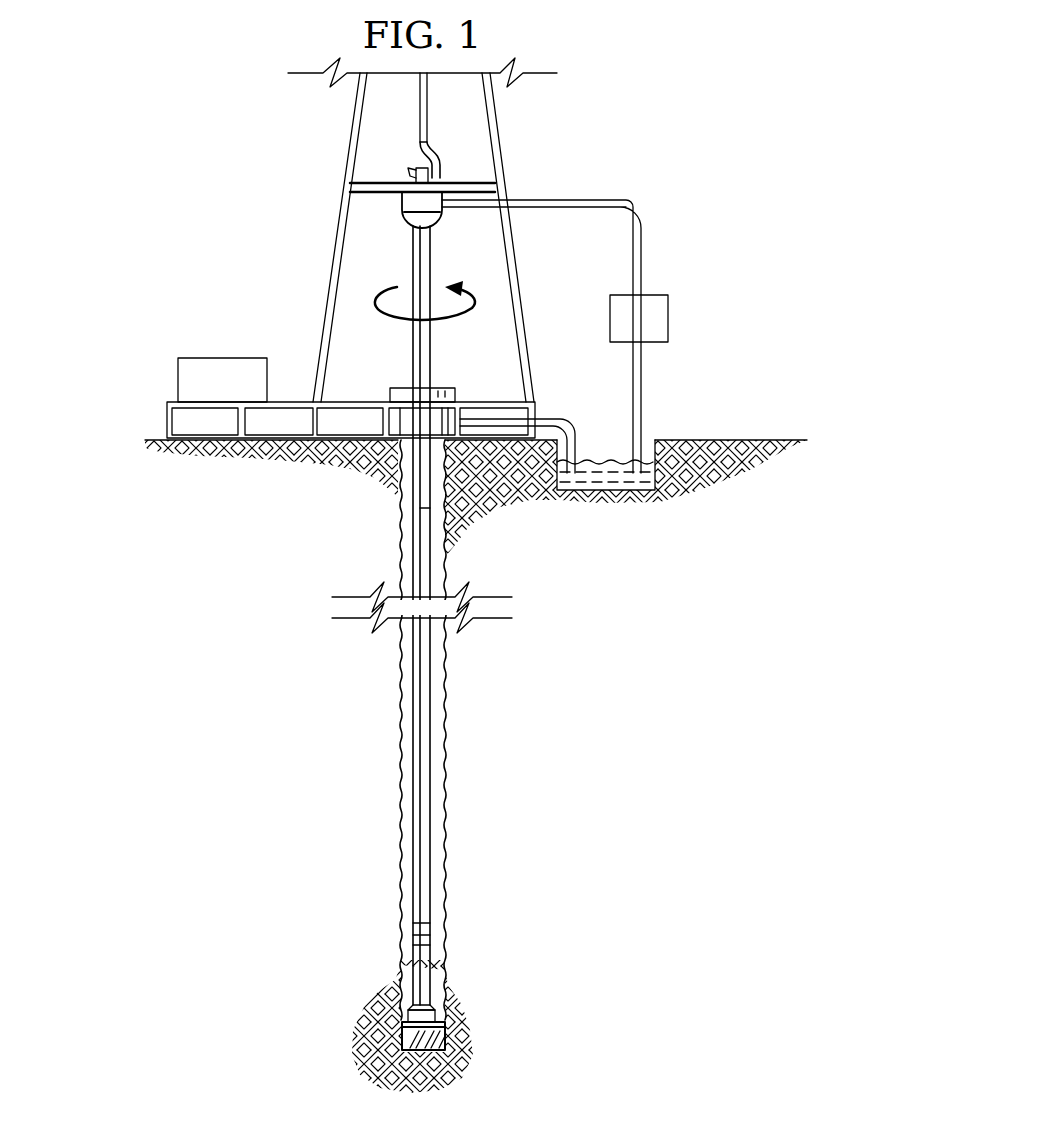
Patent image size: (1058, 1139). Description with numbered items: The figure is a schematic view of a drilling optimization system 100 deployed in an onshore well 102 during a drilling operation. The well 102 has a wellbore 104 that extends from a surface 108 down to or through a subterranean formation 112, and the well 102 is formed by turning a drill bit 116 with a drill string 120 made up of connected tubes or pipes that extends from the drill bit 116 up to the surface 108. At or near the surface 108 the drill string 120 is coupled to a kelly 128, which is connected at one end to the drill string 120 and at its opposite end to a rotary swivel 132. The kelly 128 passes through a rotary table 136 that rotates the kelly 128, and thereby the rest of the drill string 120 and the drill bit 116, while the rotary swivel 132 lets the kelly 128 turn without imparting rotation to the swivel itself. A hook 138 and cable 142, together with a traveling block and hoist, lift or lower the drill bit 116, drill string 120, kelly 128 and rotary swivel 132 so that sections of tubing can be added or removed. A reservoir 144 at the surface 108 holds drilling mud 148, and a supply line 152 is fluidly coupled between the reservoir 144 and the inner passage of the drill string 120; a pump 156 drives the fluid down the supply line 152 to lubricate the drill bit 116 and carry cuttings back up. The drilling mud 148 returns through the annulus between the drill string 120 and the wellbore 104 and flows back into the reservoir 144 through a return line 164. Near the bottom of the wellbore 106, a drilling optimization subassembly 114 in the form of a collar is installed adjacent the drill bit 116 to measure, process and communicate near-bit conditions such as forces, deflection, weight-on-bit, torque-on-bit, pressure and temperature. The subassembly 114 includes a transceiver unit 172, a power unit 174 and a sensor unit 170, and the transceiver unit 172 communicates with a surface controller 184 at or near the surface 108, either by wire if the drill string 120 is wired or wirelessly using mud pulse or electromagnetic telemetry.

The drilling optimization system 100 is at (270, 212).
The well 102 is at (450, 375).
The wellbore 104 is at (401, 712).
The wellbore 106 is at (447, 752).
The surface 108 is at (745, 440).
The subterranean formation 112 is at (513, 731).
The drilling optimization subassembly 114 is at (455, 695).
The drill bit 116 is at (445, 1022).
The drill string 120 is at (413, 685).
The kelly 128 is at (420, 498).
The rotary swivel 132 is at (404, 226).
The rotary table 136 is at (394, 388).
The hook 138 is at (440, 168).
The cable 142 is at (418, 130).
The reservoir 144 is at (612, 490).
The drilling mud 148 is at (584, 462).
The supply line 152 is at (596, 200).
The pump 156 is at (668, 318).
The return line 164 is at (548, 418).
The sensor unit 170 is at (430, 955).
The transceiver unit 172 is at (423, 930).
The power unit 174 is at (418, 942).
The surface controller 184 is at (220, 358).